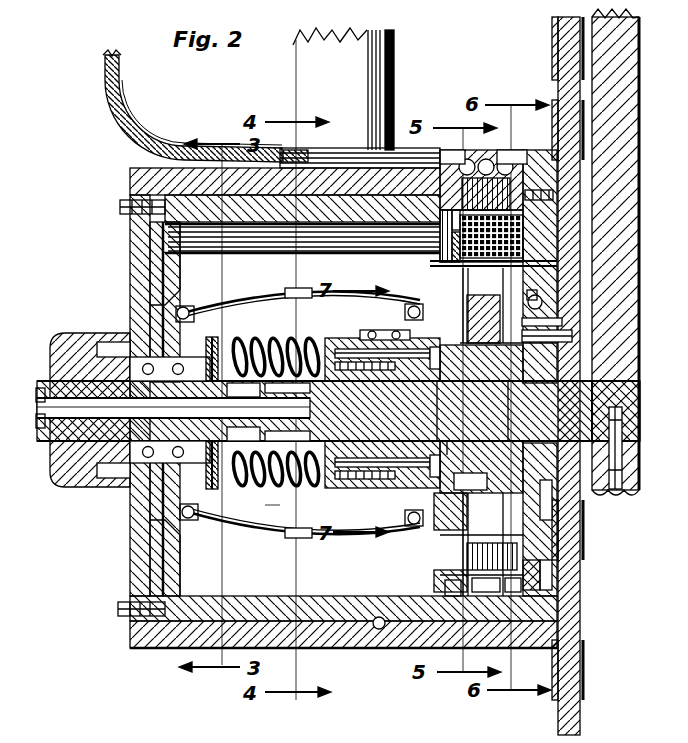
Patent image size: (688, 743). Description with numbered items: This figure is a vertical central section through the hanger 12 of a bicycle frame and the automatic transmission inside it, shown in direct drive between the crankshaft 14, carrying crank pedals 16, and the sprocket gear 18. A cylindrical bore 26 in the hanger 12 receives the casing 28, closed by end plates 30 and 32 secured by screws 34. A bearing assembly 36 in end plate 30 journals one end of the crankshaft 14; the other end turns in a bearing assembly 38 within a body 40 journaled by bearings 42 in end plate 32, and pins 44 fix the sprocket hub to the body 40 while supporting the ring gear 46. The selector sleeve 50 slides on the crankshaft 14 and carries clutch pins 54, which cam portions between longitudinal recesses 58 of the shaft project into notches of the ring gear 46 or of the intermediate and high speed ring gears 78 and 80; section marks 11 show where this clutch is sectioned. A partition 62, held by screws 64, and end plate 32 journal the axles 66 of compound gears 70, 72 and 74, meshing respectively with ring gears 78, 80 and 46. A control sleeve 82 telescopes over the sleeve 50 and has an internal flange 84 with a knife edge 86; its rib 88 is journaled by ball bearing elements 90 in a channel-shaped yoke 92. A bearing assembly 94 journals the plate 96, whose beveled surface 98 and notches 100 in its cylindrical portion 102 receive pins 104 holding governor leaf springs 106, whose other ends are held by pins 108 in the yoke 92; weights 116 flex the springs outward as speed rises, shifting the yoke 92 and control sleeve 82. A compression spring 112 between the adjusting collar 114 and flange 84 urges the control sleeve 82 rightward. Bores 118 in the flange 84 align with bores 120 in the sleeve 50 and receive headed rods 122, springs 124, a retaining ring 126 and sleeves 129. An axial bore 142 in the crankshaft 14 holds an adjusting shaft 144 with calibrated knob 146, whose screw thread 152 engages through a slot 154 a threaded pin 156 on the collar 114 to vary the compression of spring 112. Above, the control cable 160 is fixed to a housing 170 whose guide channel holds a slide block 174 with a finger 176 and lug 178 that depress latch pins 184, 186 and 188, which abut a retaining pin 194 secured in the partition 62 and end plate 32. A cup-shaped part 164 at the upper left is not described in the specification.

The section line 11 is at (478, 432).
The hanger 12 is at (160, 640).
The crankshaft 14 is at (60, 460).
The crank pedals 16 is at (620, 133).
The sprocket gear 18 is at (580, 668).
The cylindrical bore 26 is at (378, 630).
The casing 28 is at (167, 238).
The end plate 30 is at (135, 555).
The end plate 32 is at (541, 595).
The fastening screws 34 is at (118, 612).
The bearing assembly 36 is at (130, 490).
The bearing assembly 38 is at (576, 411).
The body 40 is at (572, 334).
The bearings 42 is at (545, 305).
The pins 44 is at (572, 342).
The ring gear 46 is at (560, 322).
The selector sleeve 50 is at (338, 411).
The pins 54 is at (508, 385).
The recesses 58 is at (570, 448).
The partition 62 is at (440, 252).
The fastening screws 64 is at (440, 213).
The axles 66 is at (460, 558).
The gear 70 is at (485, 612).
The gear 72 is at (481, 625).
The gear 74 is at (515, 625).
The ring gear 78 is at (447, 388).
The ring gear 80 is at (530, 300).
The control sleeve 82 is at (340, 340).
The internal flange 84 is at (380, 412).
The knife edge 86 is at (318, 448).
The rib 88 is at (412, 308).
The bearing elements 90 is at (414, 524).
The yoke member 92 is at (392, 332).
The bearing assembly 94 is at (173, 409).
The plate 96 is at (163, 305).
The beveled peripheral surface 98 is at (167, 550).
The notches 100 is at (187, 310).
The cylindrical portion 102 is at (192, 520).
The pins 104 is at (200, 507).
The governor leaf springs 106 is at (240, 299).
The pins 108 is at (445, 292).
The compression spring 112 is at (283, 498).
The spring retainer and adjusting collar 114 is at (214, 345).
The weights 116 is at (297, 288).
The bores 118 is at (305, 528).
The bores 120 is at (437, 447).
The rods 122 is at (372, 383).
The compression springs 124 is at (420, 456).
The retaining ring 126 is at (358, 470).
The sleeve 129 is at (341, 383).
The axial bore 142 is at (55, 378).
The adjusting shaft 144 is at (100, 432).
The control knob 146 is at (42, 441).
The screw thread 152 is at (268, 410).
The longitudinal slot 154 is at (282, 350).
The threaded pin 156 is at (248, 345).
The control cable 160 is at (306, 155).
The cup 164 is at (130, 106).
The housing 170 is at (287, 150).
The slide block 174 is at (379, 148).
The finger 176 is at (426, 160).
The lug 178 is at (443, 168).
The latch pin 184 is at (470, 160).
The latch pin 186 is at (502, 175).
The latch pin 188 is at (511, 156).
The retaining pin 194 is at (450, 232).